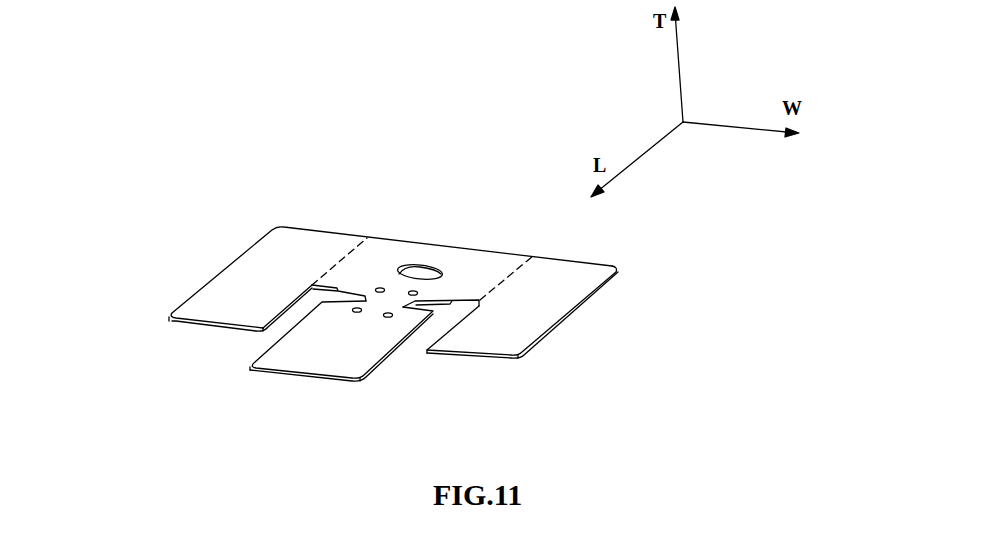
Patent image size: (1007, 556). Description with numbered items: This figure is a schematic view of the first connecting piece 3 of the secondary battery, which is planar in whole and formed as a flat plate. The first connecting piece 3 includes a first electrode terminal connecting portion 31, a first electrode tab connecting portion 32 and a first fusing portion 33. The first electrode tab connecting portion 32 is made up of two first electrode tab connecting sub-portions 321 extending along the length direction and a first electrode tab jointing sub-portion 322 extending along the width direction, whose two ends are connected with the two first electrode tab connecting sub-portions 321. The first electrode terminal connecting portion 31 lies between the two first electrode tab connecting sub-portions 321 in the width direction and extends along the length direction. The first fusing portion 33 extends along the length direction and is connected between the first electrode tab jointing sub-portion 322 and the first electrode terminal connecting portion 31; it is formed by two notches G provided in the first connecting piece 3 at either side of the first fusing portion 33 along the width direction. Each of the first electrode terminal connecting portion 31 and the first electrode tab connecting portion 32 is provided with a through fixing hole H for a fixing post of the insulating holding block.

The first connecting piece 3 is at (120, 357).
The first electrode terminal connecting portion 31 is at (287, 357).
The first electrode tab connecting portion 32 is at (708, 255).
The first electrode tab connecting sub-portion 321 is at (217, 293).
The first electrode tab jointing sub-portion 322 is at (445, 277).
The first fusing portion 33 is at (384, 305).
The fixing hole H is at (381, 288).
The notch G is at (427, 310).